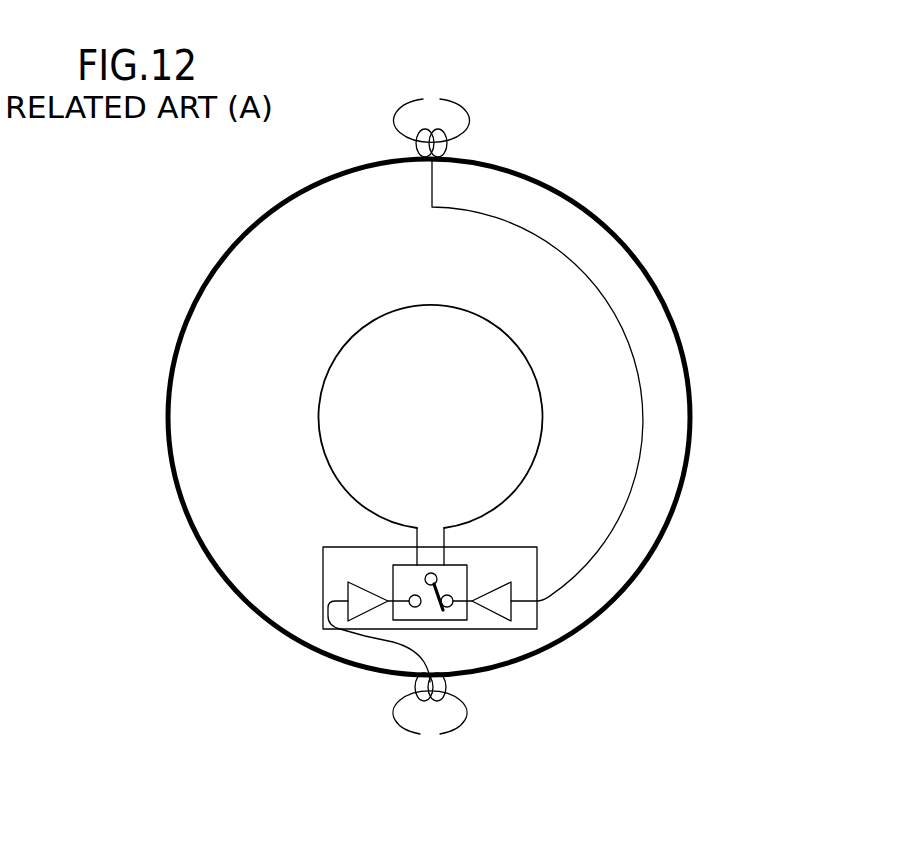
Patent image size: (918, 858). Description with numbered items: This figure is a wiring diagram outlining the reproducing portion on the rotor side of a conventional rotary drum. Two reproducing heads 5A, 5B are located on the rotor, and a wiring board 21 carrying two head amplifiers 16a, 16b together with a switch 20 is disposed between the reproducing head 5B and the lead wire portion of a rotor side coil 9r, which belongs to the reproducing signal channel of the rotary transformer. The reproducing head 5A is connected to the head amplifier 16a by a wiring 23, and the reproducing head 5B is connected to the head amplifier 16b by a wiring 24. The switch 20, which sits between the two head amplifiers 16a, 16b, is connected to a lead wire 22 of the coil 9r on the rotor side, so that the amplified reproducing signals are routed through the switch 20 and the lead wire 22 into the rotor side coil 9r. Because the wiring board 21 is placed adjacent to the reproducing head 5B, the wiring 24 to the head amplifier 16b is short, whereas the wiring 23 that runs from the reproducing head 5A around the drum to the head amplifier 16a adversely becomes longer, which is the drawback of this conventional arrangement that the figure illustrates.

The reproducing head 5A is at (470, 122).
The reproducing head 5B is at (468, 712).
The rotor side coil 9r is at (318, 371).
The head amplifier 16a is at (505, 580).
The head amplifier 16b is at (373, 597).
The switch 20 is at (433, 621).
The wiring board 21 is at (323, 570).
The lead wire 22 is at (447, 533).
The wiring 23 is at (643, 424).
The wiring 24 is at (377, 641).